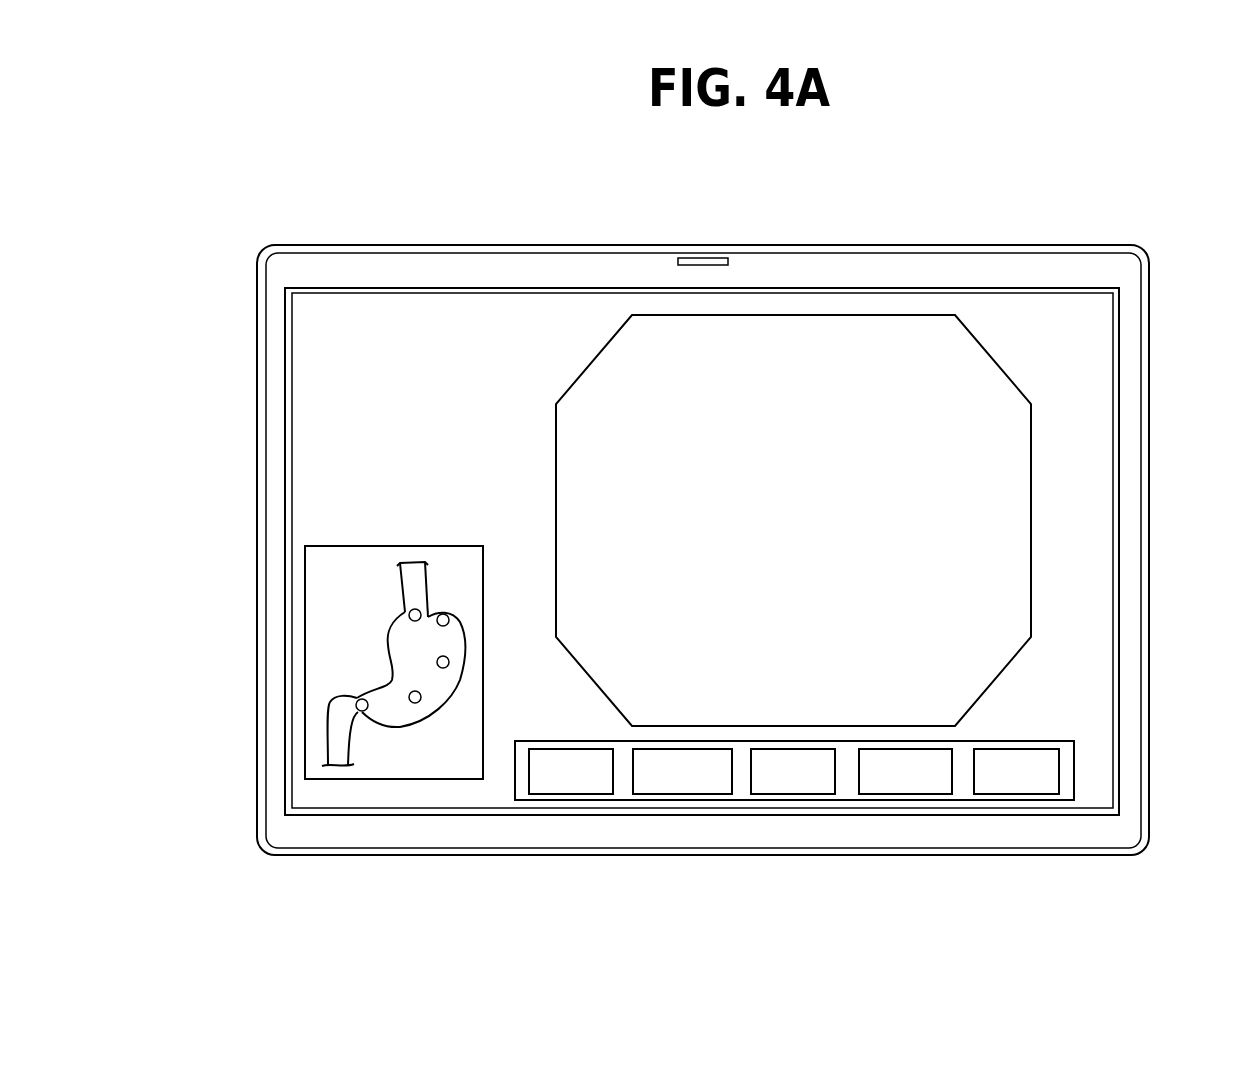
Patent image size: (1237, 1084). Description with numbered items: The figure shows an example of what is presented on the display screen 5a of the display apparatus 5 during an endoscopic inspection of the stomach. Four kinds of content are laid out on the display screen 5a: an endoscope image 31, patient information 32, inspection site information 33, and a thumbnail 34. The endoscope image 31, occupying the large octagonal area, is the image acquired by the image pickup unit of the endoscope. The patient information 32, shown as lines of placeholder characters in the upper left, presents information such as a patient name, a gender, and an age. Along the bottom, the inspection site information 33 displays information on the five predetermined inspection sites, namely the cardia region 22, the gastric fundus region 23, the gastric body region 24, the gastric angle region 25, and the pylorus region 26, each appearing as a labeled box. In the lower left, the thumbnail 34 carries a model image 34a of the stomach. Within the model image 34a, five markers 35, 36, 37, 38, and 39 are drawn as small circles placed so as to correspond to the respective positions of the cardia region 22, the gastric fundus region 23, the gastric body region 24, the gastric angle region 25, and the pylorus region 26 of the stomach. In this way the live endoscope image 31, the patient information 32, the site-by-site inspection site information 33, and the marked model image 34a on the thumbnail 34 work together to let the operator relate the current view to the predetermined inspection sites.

The display apparatus 5 is at (703, 245).
The display screen 5a is at (1120, 480).
The endoscope image 31 is at (1032, 551).
The patient information 32 is at (393, 418).
The inspection site information 33 is at (1075, 771).
The thumbnail 34 is at (305, 670).
The model image 34a is at (356, 647).
The marker 35 is at (409, 610).
The marker 36 is at (438, 615).
The marker 37 is at (446, 668).
The marker 38 is at (415, 703).
The marker 39 is at (362, 711).
The cardia region 22 is at (572, 795).
The gastric fundus region 23 is at (683, 795).
The gastric body region 24 is at (796, 795).
The gastric angle region 25 is at (908, 795).
The pylorus region 26 is at (1018, 795).